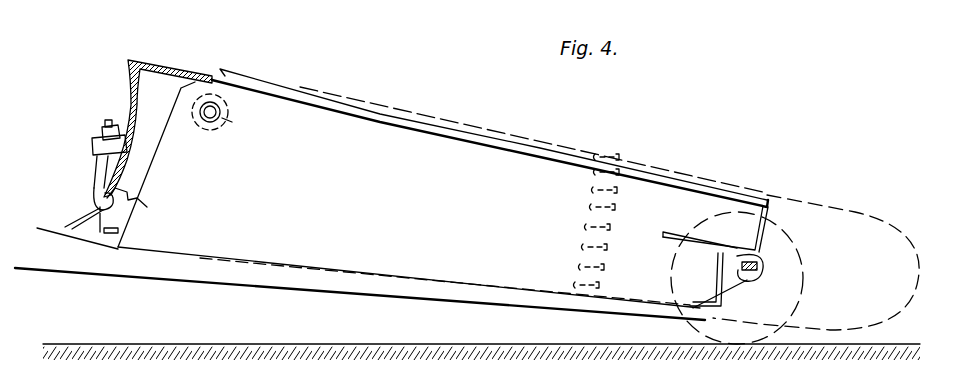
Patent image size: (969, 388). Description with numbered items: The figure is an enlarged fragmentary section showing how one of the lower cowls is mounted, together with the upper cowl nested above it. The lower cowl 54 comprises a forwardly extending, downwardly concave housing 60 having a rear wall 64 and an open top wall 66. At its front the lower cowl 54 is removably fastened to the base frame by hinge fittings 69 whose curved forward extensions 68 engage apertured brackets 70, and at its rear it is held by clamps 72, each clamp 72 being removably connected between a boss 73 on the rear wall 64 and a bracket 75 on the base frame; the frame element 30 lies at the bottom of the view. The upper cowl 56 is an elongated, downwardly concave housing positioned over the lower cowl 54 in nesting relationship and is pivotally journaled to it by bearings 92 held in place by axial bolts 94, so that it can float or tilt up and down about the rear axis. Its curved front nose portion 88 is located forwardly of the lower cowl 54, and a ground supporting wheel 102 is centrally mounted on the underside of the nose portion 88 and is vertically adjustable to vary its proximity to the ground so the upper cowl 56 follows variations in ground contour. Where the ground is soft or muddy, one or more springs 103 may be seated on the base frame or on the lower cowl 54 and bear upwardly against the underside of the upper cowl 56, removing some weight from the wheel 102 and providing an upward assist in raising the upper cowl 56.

The vehicle body floor 30 is at (43, 236).
The lower cowl 54 is at (378, 113).
The upper cowl 56 is at (458, 117).
The housing 60 is at (167, 88).
The rear wall 64 is at (128, 80).
The open top wall 66 is at (564, 157).
The curved forward extensions 68 is at (748, 282).
The hinge fittings 69 is at (677, 231).
The apertured brackets 70 is at (783, 228).
The clamps 72 is at (97, 173).
The boss 73 is at (93, 148).
The bracket 75 is at (150, 203).
The front nose portion 88 is at (908, 236).
The bearings 92 is at (212, 131).
The axial bolts 94 is at (228, 117).
The ground supporting wheel 102 is at (687, 320).
The springs 103 is at (630, 183).